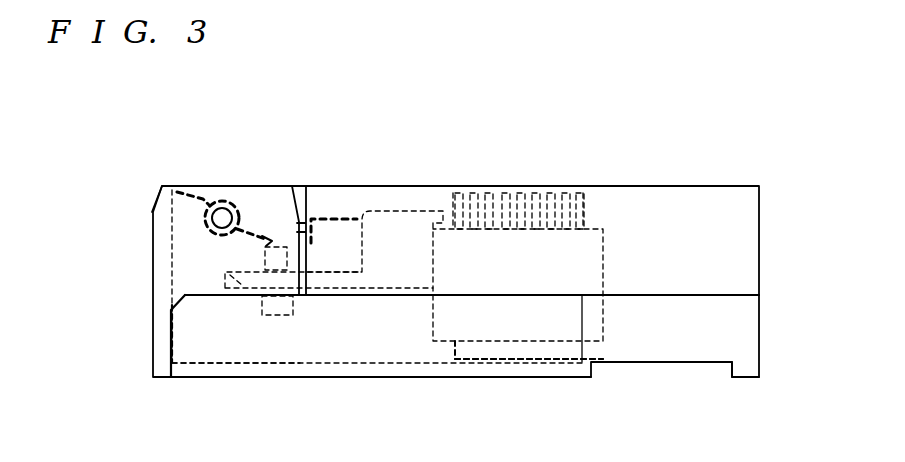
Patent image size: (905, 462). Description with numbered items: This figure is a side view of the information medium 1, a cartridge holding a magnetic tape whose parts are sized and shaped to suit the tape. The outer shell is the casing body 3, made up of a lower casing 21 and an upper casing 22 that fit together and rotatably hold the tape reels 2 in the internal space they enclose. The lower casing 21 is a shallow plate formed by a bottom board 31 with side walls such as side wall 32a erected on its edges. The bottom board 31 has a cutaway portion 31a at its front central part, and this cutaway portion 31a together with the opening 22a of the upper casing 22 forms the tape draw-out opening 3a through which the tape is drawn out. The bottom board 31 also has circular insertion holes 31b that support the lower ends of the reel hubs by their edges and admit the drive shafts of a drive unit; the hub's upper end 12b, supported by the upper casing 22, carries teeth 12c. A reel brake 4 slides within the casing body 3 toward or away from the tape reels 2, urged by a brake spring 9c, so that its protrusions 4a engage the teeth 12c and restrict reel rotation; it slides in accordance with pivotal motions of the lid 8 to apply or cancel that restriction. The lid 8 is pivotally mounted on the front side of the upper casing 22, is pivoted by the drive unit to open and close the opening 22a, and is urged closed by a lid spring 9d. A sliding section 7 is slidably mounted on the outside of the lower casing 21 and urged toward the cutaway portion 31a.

The information medium 1 is at (508, 112).
The tape reel 2 is at (603, 270).
The casing body 3 is at (780, 280).
The tape draw-out opening 3a is at (168, 297).
The reel brake 4 is at (402, 296).
The protrusion 4a is at (447, 222).
The sliding section 7 is at (360, 367).
The lid 8 is at (162, 227).
The brake spring 9c is at (333, 213).
The lid spring 9d is at (222, 182).
The upper end 12b is at (584, 216).
The teeth 12c is at (555, 193).
The lower casing 21 is at (782, 323).
The upper casing 22 is at (772, 232).
The opening 22a is at (187, 268).
The bottom board 31 is at (485, 363).
The cutaway portion 31a is at (212, 366).
The insertion hole 31b is at (524, 365).
The side wall 32a is at (762, 360).